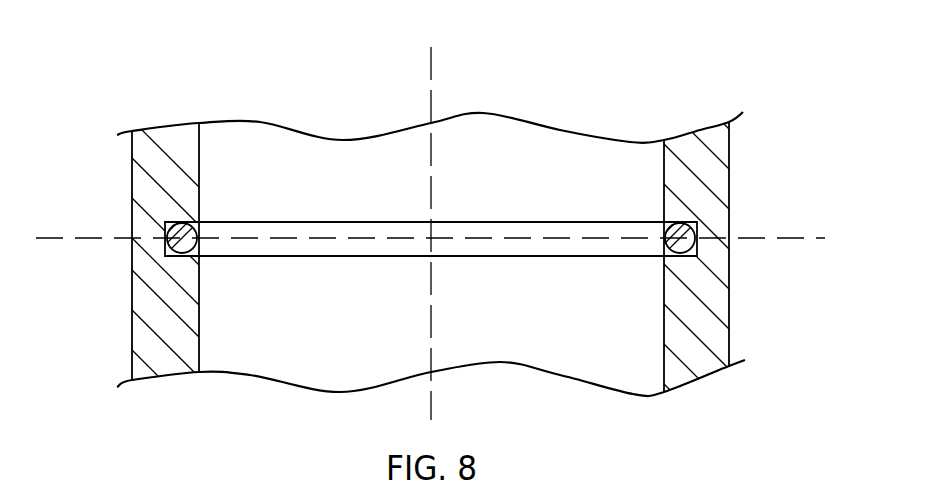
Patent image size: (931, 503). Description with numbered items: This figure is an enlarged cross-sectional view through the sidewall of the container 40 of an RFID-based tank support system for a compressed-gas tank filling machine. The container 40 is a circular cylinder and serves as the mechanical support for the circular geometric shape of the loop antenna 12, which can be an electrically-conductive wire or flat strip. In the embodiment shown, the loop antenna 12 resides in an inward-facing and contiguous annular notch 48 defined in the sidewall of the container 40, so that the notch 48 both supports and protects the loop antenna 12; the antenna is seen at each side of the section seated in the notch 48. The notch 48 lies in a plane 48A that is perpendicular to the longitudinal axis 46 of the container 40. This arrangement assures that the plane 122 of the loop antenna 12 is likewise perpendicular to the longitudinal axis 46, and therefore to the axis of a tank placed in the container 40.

The container 40 is at (729, 170).
The loop antenna 12 is at (577, 248).
The plane of loop antenna 122 is at (543, 230).
The annular notch 48 is at (165, 250).
The plane of notch 48A is at (813, 238).
The longitudinal axis 46 is at (431, 63).